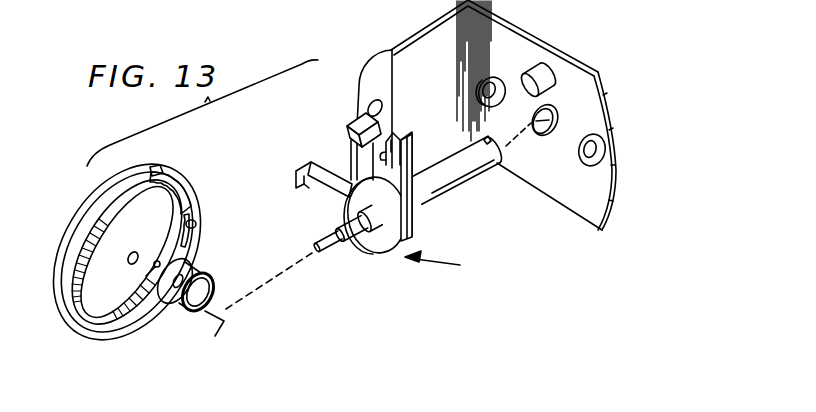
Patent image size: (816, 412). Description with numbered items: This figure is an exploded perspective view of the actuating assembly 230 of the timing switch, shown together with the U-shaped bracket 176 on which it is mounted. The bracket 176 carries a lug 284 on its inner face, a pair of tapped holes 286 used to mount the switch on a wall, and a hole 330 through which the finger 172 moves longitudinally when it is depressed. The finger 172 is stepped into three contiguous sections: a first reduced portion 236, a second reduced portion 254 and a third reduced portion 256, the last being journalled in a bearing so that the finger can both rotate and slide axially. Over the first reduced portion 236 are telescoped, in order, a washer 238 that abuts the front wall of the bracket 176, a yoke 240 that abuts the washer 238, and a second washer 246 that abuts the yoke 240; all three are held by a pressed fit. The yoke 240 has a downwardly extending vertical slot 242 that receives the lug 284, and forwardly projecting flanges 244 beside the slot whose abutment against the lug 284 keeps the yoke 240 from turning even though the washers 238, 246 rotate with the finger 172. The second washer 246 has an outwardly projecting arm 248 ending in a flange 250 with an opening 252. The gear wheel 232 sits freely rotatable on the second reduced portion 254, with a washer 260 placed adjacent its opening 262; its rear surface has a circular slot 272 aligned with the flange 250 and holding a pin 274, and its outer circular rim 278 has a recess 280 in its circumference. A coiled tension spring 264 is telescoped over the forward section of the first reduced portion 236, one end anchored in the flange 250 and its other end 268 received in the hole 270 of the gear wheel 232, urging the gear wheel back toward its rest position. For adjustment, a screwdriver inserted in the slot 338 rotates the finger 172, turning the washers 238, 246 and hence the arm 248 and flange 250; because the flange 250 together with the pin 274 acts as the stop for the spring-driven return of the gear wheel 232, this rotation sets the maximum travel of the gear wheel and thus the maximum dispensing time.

The finger 172 is at (437, 197).
The U-shaped bracket 176 is at (600, 80).
The actuating assembly 230 is at (453, 265).
The gear wheel 232 is at (187, 178).
The first reduced portion 236 is at (377, 233).
The washer 238 is at (418, 228).
The yoke 240 is at (412, 140).
The vertical slot 242 is at (357, 150).
The flanges 244 is at (393, 127).
The second washer 246 is at (383, 240).
The arm 248 is at (337, 190).
The flange 250 is at (305, 168).
The opening 252 is at (306, 188).
The second reduced portion 254 is at (352, 232).
The third reduced portion 256 is at (322, 250).
The washer 260 is at (172, 303).
The opening 262 is at (133, 251).
The coiled tension spring 264 is at (199, 272).
The other end of tension spring 268 is at (215, 336).
The hole 270 is at (147, 275).
The circular slot 272 is at (92, 318).
The pin 274 is at (193, 218).
The outer circular rim 278 is at (97, 200).
The recess 280 is at (155, 166).
The lug 284 is at (550, 72).
The tapped holes 286 is at (510, 63).
The hole 330 is at (567, 108).
The slot 338 is at (505, 147).